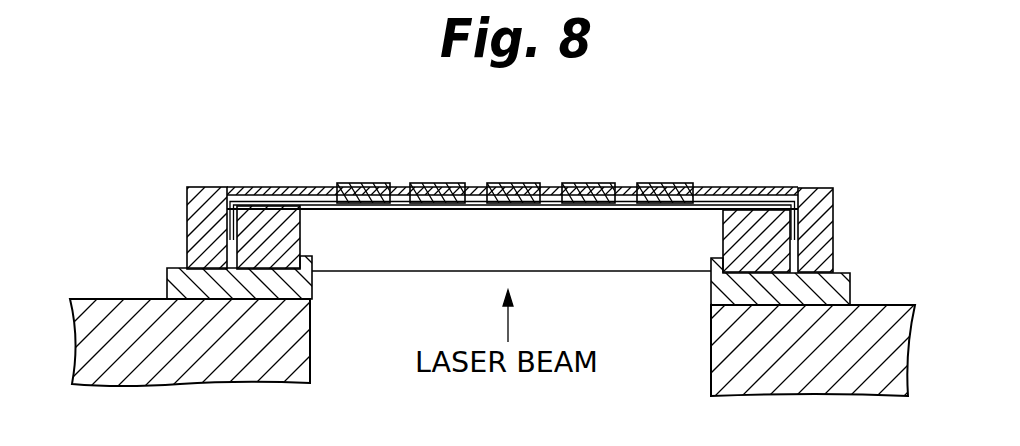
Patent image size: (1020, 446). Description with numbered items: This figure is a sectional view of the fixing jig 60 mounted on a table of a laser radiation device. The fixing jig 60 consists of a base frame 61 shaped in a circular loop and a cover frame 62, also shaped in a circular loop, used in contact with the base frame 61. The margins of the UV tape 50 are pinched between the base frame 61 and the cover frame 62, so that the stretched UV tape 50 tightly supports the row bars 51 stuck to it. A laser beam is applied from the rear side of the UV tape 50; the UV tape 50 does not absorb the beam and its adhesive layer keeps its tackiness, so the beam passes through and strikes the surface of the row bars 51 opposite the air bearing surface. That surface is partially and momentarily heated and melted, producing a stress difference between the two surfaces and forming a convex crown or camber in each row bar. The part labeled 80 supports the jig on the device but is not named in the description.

The UV tape 50 is at (232, 223).
The row bars 51 is at (433, 183).
The fixing jig 60 is at (818, 184).
The base frame 61 is at (833, 218).
The cover frame 62 is at (768, 220).
The support stage 80 is at (311, 293).